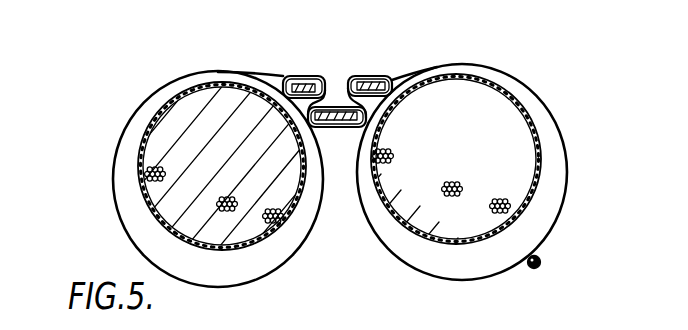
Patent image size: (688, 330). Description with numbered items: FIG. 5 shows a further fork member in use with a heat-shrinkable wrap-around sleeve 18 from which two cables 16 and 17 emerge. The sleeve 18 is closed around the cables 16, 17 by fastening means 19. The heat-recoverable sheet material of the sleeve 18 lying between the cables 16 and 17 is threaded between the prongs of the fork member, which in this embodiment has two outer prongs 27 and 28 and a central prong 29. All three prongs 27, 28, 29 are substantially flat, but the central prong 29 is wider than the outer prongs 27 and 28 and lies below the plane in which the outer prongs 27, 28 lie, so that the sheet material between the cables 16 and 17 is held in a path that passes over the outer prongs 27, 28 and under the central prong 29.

The cable 16 is at (204, 228).
The cable 17 is at (423, 210).
The heat-shrinkable wrap-around sleeve 18 is at (555, 137).
The fastening means 19 is at (531, 270).
The outer prong 27 is at (305, 86).
The outer prong 28 is at (378, 85).
The central prong 29 is at (332, 113).